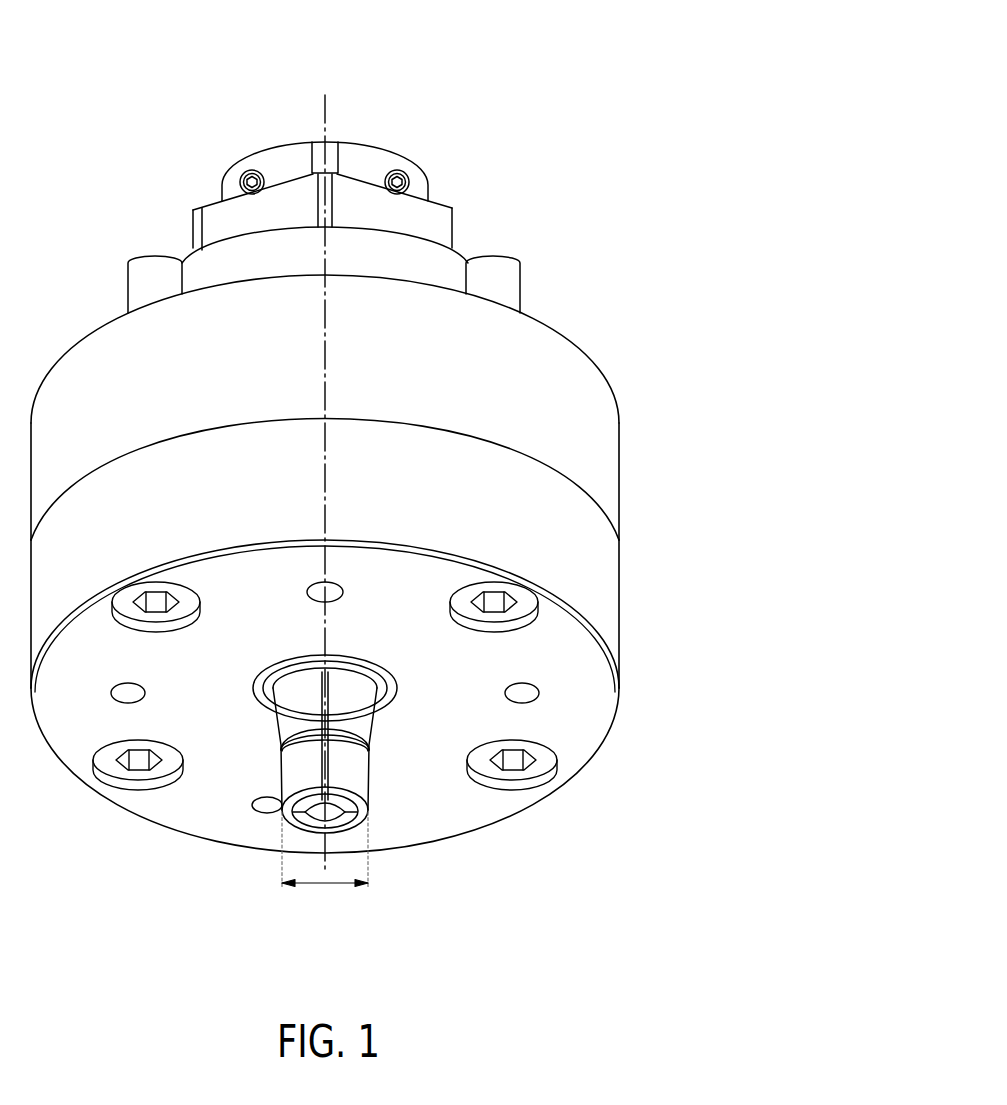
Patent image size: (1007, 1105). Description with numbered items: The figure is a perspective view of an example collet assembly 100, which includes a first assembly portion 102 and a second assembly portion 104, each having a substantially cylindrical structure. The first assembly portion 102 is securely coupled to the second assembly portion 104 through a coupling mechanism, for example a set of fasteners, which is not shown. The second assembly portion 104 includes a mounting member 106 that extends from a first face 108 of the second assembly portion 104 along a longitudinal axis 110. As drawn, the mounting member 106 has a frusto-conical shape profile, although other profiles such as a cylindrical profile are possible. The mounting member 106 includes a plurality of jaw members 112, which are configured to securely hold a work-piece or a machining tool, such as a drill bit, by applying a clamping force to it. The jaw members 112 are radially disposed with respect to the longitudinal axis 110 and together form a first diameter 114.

The collet assembly 100 is at (572, 56).
The first assembly portion 102 is at (573, 360).
The second assembly portion 104 is at (590, 555).
The mounting member 106 is at (343, 697).
The first face 108 is at (572, 677).
The longitudinal axis 110 is at (325, 480).
The jaw members 112 is at (338, 763).
The first diameter 114 is at (322, 884).